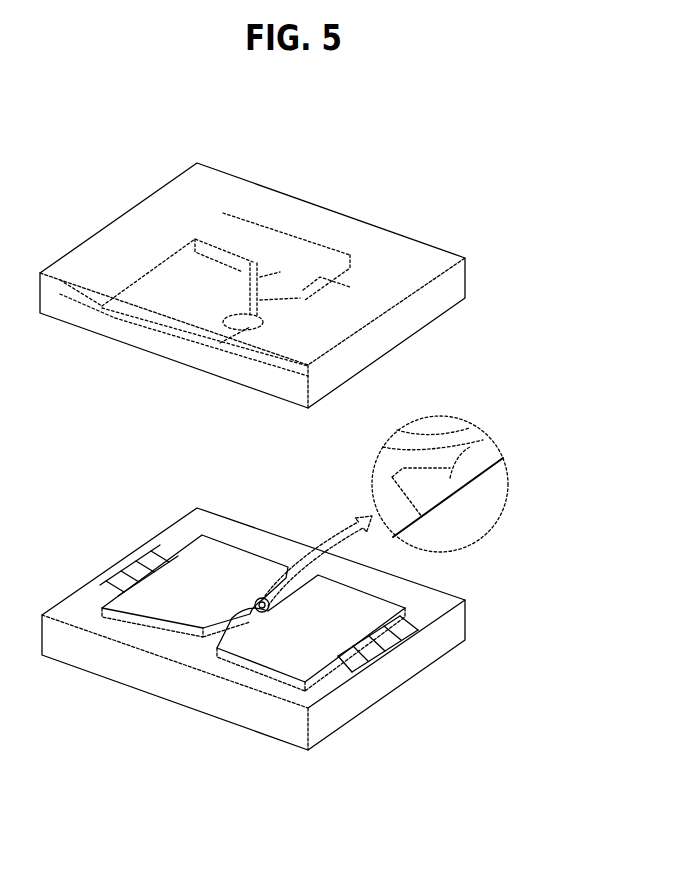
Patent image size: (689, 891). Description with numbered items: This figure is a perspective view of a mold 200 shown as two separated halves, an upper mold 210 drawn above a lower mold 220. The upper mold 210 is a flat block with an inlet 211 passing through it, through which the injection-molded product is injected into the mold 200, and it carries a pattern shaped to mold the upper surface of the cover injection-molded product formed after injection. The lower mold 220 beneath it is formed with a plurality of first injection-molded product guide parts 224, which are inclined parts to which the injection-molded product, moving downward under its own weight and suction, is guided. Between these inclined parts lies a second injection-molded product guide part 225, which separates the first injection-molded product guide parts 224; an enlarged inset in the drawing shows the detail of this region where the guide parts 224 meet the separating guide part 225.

The mold 200 is at (82, 114).
The upper mold 210 is at (455, 278).
The inlet 211 is at (193, 228).
The lower mold 220 is at (462, 620).
The first injection-molded product guide part 224 is at (245, 558).
The second injection-molded product guide part 225 is at (383, 497).